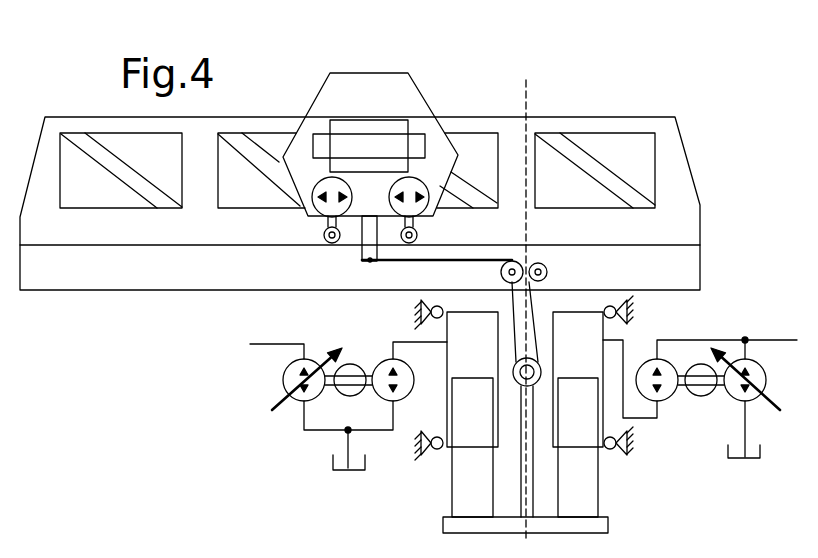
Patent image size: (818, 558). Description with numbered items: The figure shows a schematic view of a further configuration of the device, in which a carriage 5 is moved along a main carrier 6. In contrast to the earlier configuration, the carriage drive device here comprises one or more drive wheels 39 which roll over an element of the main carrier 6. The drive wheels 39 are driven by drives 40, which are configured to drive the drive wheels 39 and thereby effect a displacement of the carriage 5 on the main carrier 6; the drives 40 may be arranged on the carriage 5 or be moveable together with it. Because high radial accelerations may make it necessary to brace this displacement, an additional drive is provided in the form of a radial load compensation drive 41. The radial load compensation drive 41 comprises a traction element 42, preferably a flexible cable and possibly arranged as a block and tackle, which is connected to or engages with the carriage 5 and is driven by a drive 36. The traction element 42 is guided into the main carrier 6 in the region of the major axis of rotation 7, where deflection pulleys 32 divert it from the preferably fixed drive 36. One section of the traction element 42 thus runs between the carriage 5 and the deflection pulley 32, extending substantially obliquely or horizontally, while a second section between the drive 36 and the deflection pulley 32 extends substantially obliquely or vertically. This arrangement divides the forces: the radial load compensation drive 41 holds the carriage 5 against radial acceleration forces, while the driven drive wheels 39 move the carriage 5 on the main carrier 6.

The carriage 5 is at (402, 97).
The main carrier 6 is at (387, 192).
The major axis of rotation 7 is at (528, 95).
The deflection pulleys 32 is at (517, 262).
The drive 36 is at (528, 457).
The drive wheels 39 is at (368, 263).
The drives 40 is at (311, 188).
The radial load compensation drive 41 is at (410, 422).
The traction element 42 is at (533, 320).